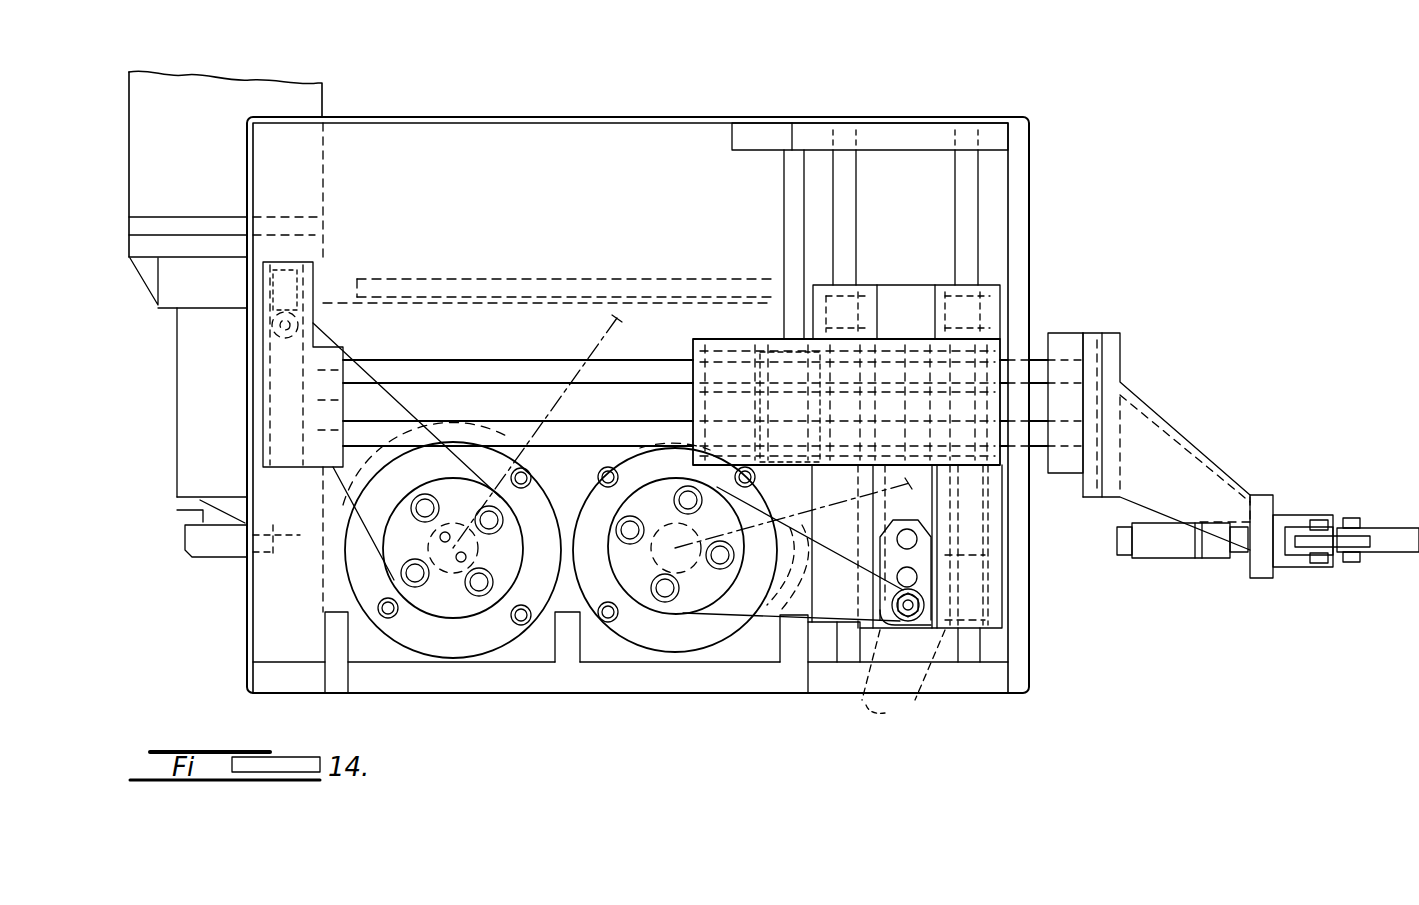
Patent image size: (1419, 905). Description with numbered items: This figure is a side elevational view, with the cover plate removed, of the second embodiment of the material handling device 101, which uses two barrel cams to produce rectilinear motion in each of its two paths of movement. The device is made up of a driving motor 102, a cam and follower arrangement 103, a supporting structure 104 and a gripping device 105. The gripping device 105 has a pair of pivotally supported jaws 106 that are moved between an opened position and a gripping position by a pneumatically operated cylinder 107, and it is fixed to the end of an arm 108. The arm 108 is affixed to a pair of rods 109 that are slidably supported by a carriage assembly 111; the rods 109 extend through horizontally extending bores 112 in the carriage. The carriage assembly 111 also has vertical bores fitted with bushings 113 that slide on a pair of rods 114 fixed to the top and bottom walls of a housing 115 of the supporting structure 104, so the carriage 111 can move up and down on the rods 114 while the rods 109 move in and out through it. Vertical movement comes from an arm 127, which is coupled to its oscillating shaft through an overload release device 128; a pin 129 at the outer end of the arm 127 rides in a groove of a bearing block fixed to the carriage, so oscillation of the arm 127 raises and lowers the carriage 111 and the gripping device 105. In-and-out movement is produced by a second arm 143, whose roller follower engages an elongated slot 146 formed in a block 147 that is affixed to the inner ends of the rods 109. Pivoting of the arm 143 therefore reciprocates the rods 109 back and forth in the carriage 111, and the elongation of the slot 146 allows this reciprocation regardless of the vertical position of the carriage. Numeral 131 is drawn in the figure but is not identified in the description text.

The material handling device 101 is at (1073, 270).
The driving motor 102 is at (325, 93).
The cam and follower arrangement 103 is at (623, 262).
The supporting structure 104 is at (686, 405).
The gripping device 105 is at (1298, 513).
The jaws 106 is at (1408, 548).
The pneumatically operated cylinder 107 is at (1163, 548).
The arm 108 is at (1168, 436).
The rods 109 is at (1033, 422).
The carriage assembly 111 is at (718, 338).
The horizontally extending bores 112 is at (740, 340).
The bushings 113 is at (957, 285).
The rods 114 is at (968, 173).
The housing 115 is at (828, 95).
The arm 127 is at (740, 605).
The overload release device 128 is at (655, 605).
The pin 129 is at (925, 598).
The idler bracket 131 is at (923, 553).
The arm 143 is at (392, 398).
The slot 146 is at (310, 252).
The block 147 is at (313, 290).